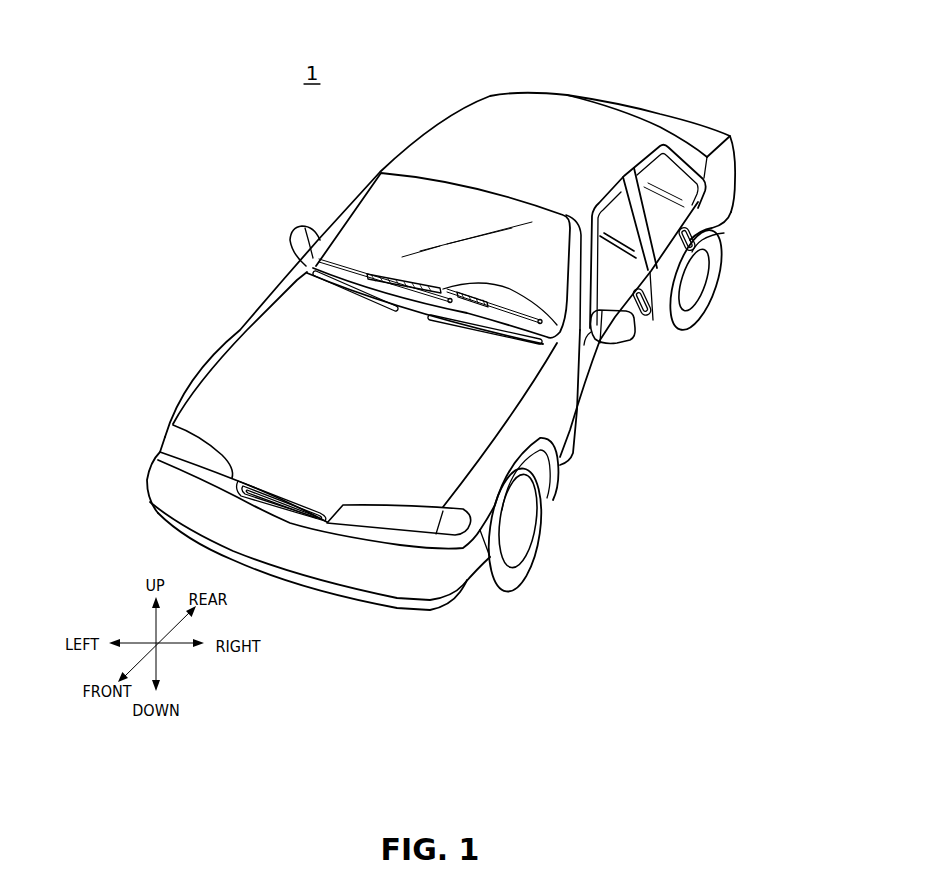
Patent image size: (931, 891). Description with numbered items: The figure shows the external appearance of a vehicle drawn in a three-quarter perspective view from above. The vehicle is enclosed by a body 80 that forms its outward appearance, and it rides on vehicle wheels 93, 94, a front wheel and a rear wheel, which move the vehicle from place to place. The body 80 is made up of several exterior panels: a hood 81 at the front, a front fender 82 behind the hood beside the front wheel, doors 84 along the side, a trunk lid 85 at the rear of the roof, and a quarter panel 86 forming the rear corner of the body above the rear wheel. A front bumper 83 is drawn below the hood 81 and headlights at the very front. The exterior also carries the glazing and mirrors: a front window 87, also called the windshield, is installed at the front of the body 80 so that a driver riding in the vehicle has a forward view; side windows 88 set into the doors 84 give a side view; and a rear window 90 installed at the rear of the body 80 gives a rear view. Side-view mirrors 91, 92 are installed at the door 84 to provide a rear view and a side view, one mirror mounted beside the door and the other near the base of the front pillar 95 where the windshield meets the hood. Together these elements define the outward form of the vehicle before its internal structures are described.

The body 80 is at (445, 103).
The hood 81 is at (231, 368).
The front fender 82 is at (570, 410).
The front bumper 83 is at (412, 577).
The door 84 is at (600, 377).
The trunk lid 85 is at (698, 132).
The quarter panel 86 is at (733, 157).
The front window 87 is at (373, 203).
The side windows 88 is at (615, 277).
The rear window 90 is at (673, 127).
The side-view mirror 91 is at (623, 330).
The side-view mirror 92 is at (297, 242).
The vehicle wheel 93 is at (520, 524).
The vehicle wheel 94 is at (698, 280).
The front pillar 95 is at (318, 269).